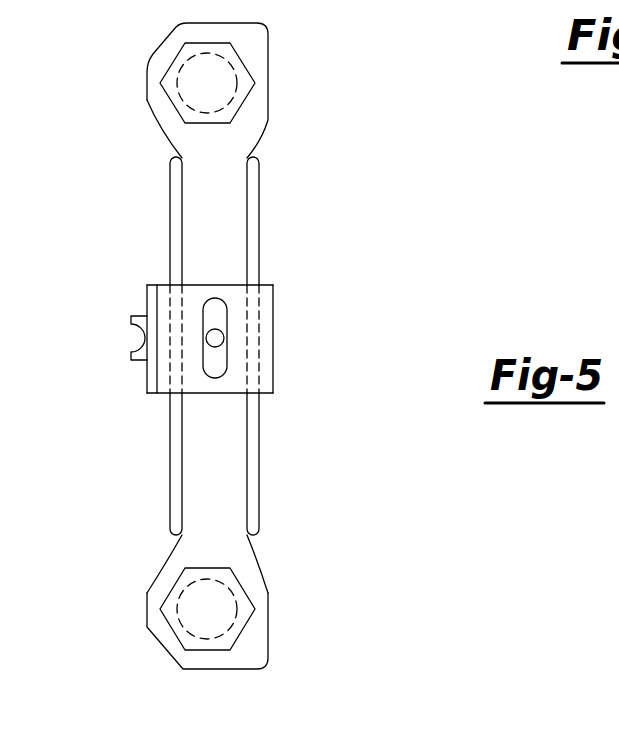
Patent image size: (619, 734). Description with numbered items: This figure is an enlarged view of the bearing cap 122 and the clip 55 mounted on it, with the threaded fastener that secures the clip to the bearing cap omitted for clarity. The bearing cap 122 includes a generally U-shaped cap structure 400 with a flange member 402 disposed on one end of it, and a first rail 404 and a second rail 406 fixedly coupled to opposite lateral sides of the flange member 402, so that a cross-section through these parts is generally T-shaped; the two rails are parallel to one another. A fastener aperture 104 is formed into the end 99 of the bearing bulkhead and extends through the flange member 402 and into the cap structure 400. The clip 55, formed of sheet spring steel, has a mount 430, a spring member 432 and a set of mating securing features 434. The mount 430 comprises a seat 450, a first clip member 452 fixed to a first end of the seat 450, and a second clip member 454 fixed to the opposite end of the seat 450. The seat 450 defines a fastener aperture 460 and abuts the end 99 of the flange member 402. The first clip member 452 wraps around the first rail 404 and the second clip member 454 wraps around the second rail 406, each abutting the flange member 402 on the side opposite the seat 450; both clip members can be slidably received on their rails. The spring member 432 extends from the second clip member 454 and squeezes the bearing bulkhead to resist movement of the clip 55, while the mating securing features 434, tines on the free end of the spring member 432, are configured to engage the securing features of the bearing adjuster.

The end of bearing bulkhead 99 is at (218, 165).
The bearing cap 122 is at (322, 177).
The clip 55 is at (193, 290).
The seat 450 is at (212, 290).
The flange member 402 is at (233, 262).
The second clip member 454 is at (165, 295).
The fastener aperture 460 is at (228, 316).
The mating securing features 434 is at (110, 324).
The fastener aperture 104 is at (224, 337).
The first clip member 452 is at (273, 372).
The spring member 432 is at (145, 360).
The mount 430 is at (198, 385).
The first rail 404 is at (253, 440).
The second rail 406 is at (173, 490).
The cap structure 400 is at (233, 500).